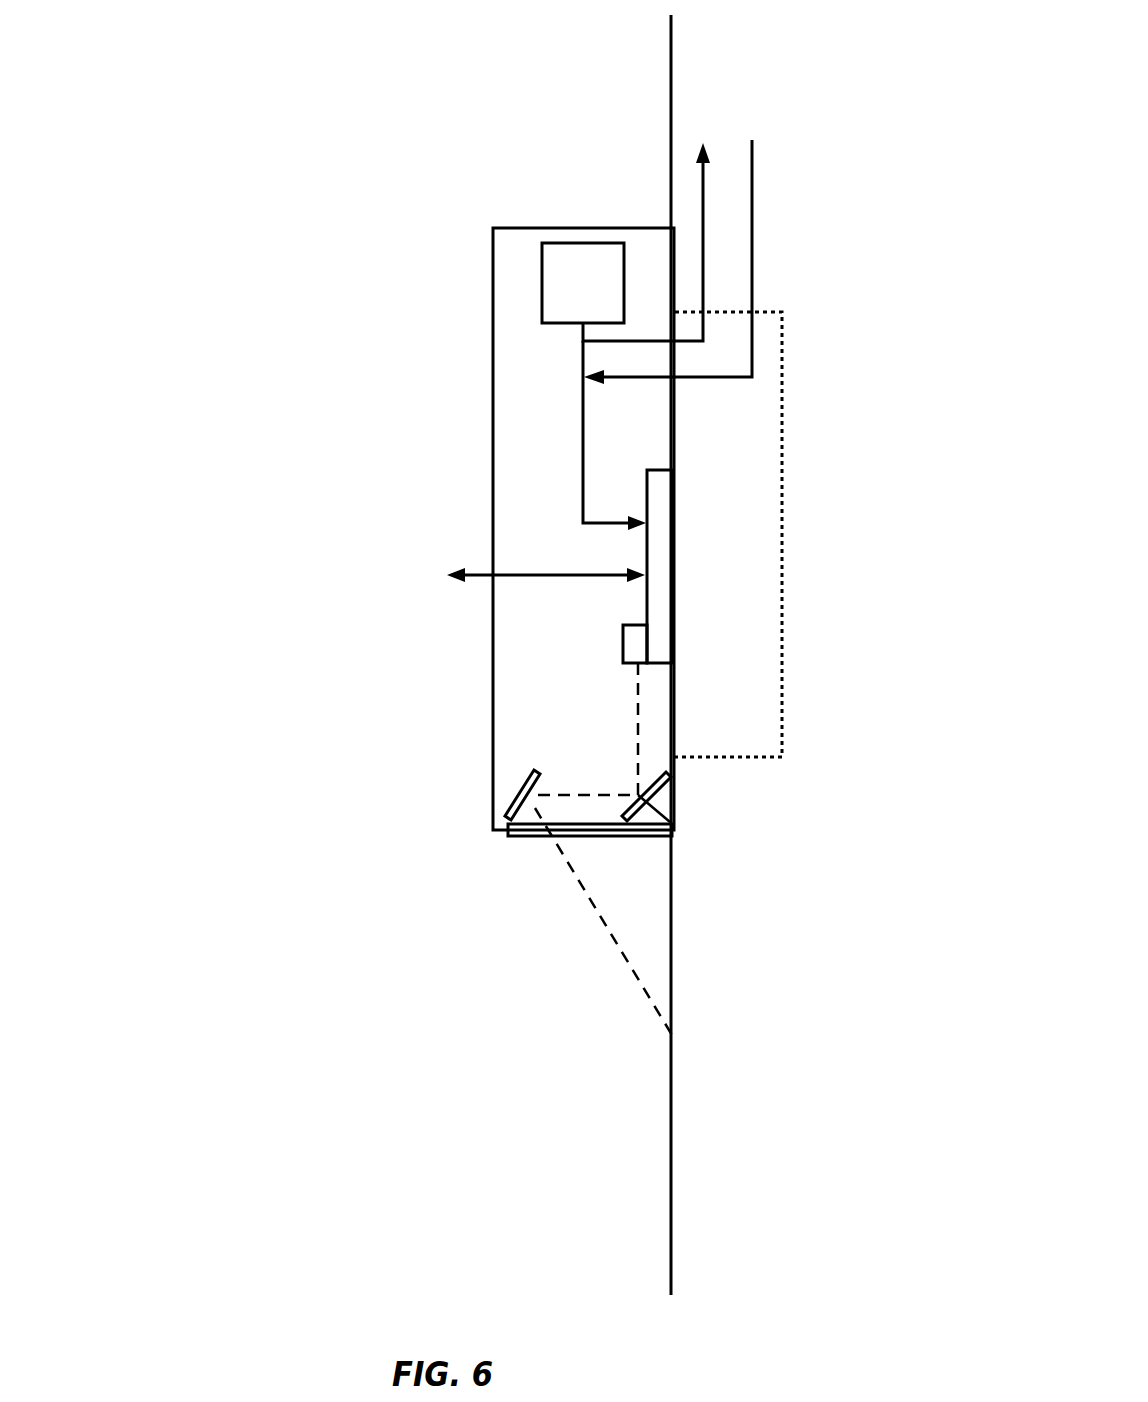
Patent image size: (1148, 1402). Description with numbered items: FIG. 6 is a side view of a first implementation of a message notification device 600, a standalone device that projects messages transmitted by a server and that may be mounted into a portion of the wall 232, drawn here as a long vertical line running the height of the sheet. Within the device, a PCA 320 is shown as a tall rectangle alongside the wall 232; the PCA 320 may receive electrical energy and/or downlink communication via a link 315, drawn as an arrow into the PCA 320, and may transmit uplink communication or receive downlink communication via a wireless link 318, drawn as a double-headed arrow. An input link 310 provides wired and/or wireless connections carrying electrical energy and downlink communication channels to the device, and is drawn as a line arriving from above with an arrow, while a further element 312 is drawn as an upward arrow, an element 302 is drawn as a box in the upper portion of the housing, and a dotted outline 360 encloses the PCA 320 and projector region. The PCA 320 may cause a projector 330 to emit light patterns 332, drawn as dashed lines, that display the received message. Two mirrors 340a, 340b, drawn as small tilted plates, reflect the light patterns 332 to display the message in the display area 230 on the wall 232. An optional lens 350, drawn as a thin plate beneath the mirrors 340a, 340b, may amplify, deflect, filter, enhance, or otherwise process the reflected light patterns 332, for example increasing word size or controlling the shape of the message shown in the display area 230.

The message notification device 600 is at (165, 80).
The wall 232 is at (670, 1265).
The controller 302 is at (542, 319).
The output signal 312 is at (705, 201).
The input link 310 is at (752, 257).
The sensor module 360 is at (782, 368).
The link 315 is at (583, 514).
The PCA 320 is at (673, 585).
The wireless link 318 is at (522, 575).
The projector 330 is at (647, 642).
The light patterns 332 is at (635, 743).
The mirror 340a is at (688, 828).
The mirror 340b is at (507, 800).
The lens 350 is at (508, 837).
The display area 230 is at (530, 990).